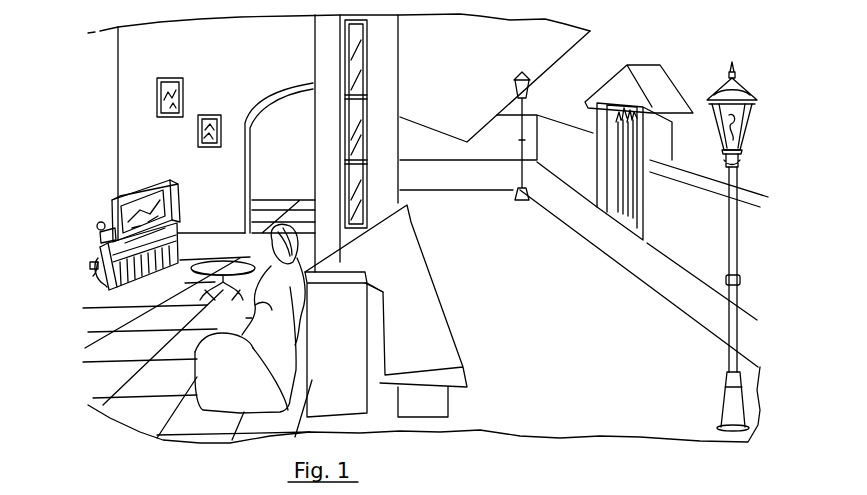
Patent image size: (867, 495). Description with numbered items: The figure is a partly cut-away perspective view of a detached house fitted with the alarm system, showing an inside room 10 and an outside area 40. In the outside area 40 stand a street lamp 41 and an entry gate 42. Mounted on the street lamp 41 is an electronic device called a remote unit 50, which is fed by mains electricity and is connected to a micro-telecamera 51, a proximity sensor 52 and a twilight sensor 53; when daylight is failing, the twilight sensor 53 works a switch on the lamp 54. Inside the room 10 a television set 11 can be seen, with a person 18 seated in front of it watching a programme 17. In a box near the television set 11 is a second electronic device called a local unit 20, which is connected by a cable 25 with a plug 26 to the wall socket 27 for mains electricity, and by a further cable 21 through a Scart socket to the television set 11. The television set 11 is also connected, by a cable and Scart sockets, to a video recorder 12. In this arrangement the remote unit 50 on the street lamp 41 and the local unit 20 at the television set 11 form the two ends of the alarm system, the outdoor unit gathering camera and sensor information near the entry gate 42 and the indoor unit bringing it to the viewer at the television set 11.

The inside room 10 is at (243, 60).
The television set 11 is at (184, 191).
The video recorder 12 is at (183, 229).
The programme 17 is at (146, 207).
The person 18 is at (284, 238).
The local unit 20 is at (94, 235).
The cable 21 is at (101, 228).
The cable 25 is at (107, 287).
The plug 26 is at (92, 265).
The wall socket 27 is at (93, 276).
The outside area 40 is at (588, 404).
The street lamp 41 is at (716, 318).
The entry gate 42 is at (627, 212).
The remote unit 50 is at (753, 168).
The micro-telecamera 51 is at (730, 160).
The proximity sensor 52 is at (745, 151).
The twilight sensor 53 is at (722, 155).
The switch on the lamp 54 is at (745, 125).